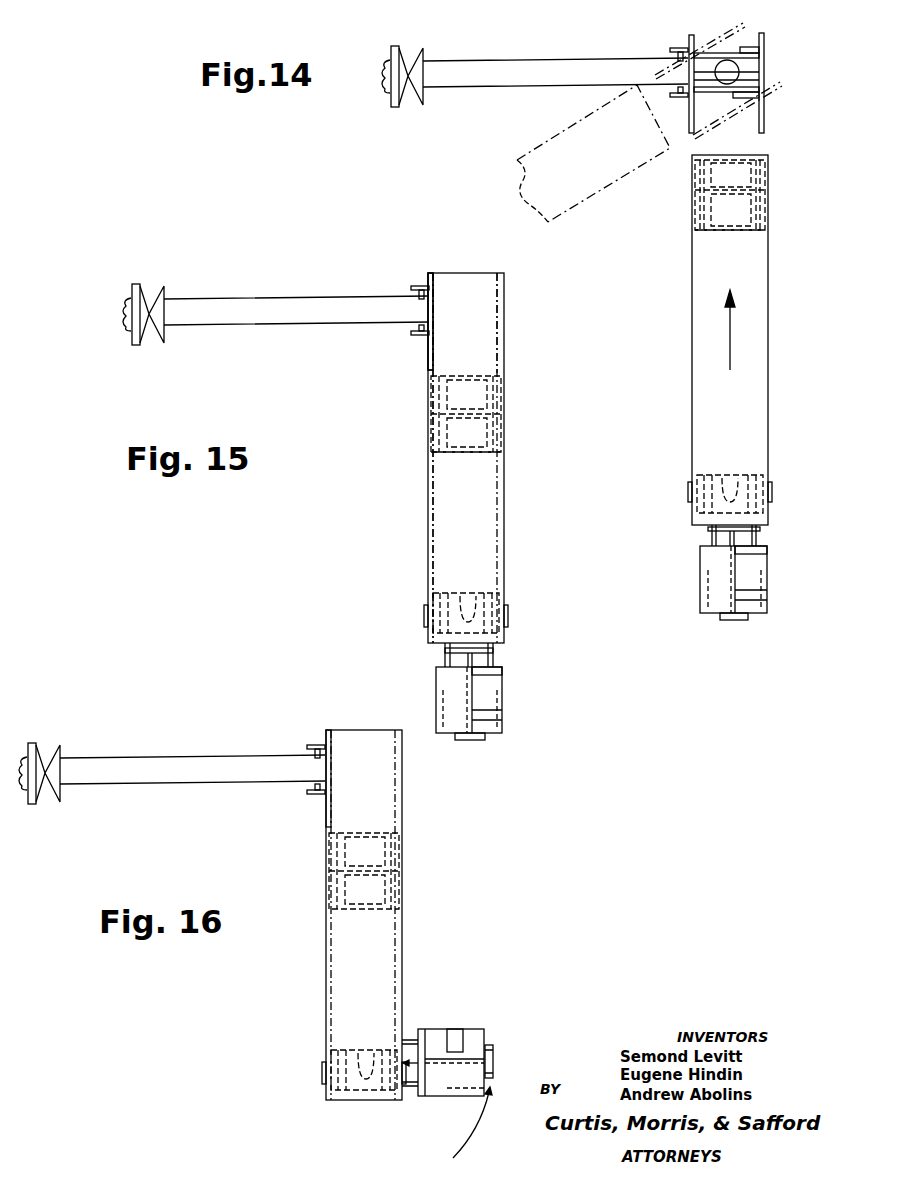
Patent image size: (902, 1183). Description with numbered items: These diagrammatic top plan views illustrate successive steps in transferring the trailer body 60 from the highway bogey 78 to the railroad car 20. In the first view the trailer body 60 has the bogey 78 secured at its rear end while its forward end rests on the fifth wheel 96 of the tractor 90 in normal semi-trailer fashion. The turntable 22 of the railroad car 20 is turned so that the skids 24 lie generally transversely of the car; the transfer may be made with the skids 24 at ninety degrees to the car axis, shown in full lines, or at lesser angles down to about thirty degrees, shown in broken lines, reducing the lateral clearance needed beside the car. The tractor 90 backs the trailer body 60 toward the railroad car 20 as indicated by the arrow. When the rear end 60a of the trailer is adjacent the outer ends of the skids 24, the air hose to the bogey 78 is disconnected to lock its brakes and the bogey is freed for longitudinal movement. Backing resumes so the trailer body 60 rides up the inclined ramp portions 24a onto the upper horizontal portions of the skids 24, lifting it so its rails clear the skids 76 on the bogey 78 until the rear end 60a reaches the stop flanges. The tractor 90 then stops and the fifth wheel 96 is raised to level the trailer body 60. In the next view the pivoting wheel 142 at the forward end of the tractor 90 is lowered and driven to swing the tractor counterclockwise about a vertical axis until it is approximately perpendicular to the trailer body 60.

In FIG. 14, the railroad car 20 is at (548, 61).
In FIG. 14, the turntable 22 is at (717, 43).
In FIG. 14, the skids 24 is at (650, 63).
In FIG. 15, the skids 24 is at (498, 322).
In FIG. 15, the inclined ramp portions 24a is at (428, 275).
In FIG. 14, the trailer body 60 is at (545, 138).
In FIG. 15, the rear end of the trailer body 60a is at (462, 273).
In FIG. 14, the skids on the bogey 76 is at (694, 209).
In FIG. 14, the highway bogey 78 is at (699, 236).
In FIG. 15, the highway bogey 78 is at (503, 455).
In FIG. 14, the tractor 90 is at (699, 576).
In FIG. 15, the tractor 90 is at (469, 691).
In FIG. 16, the tractor 90 is at (440, 1029).
In FIG. 14, the fifth wheel 96 is at (718, 490).
In FIG. 16, the pivoting wheel 142 is at (495, 1047).